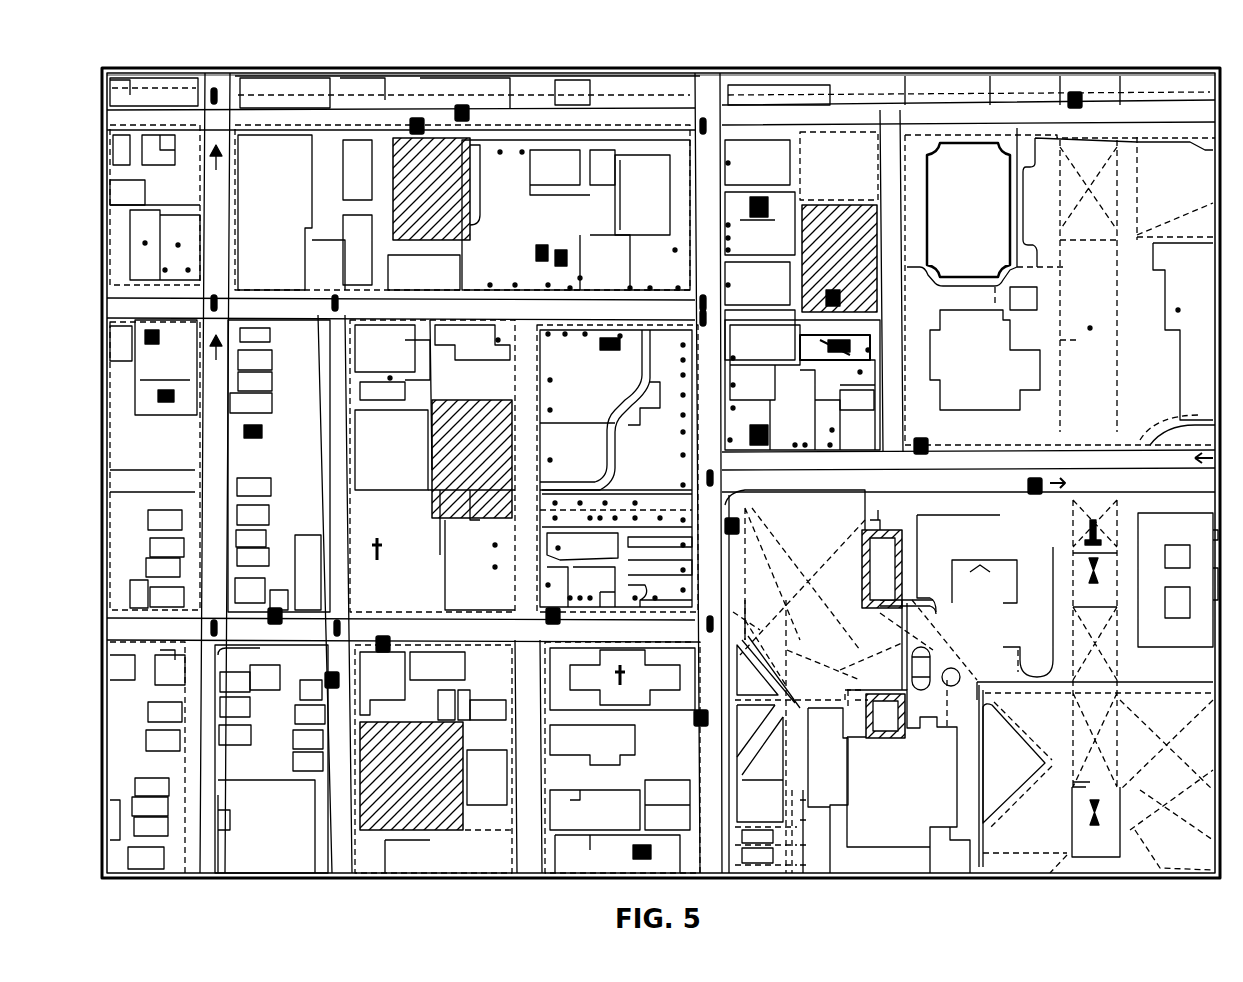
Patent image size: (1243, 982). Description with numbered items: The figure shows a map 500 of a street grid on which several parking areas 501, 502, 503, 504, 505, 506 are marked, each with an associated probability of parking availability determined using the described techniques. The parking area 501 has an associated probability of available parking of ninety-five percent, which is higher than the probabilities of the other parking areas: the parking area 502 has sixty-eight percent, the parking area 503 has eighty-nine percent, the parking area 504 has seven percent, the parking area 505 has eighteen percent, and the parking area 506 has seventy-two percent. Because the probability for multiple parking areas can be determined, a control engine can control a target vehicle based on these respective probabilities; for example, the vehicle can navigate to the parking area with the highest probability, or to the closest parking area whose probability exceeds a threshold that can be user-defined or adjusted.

The map 500 is at (115, 40).
The parking area 501 is at (433, 158).
The parking area 502 is at (447, 478).
The parking area 503 is at (376, 808).
The parking area 504 is at (878, 737).
The parking area 505 is at (868, 552).
The parking area 506 is at (826, 305).